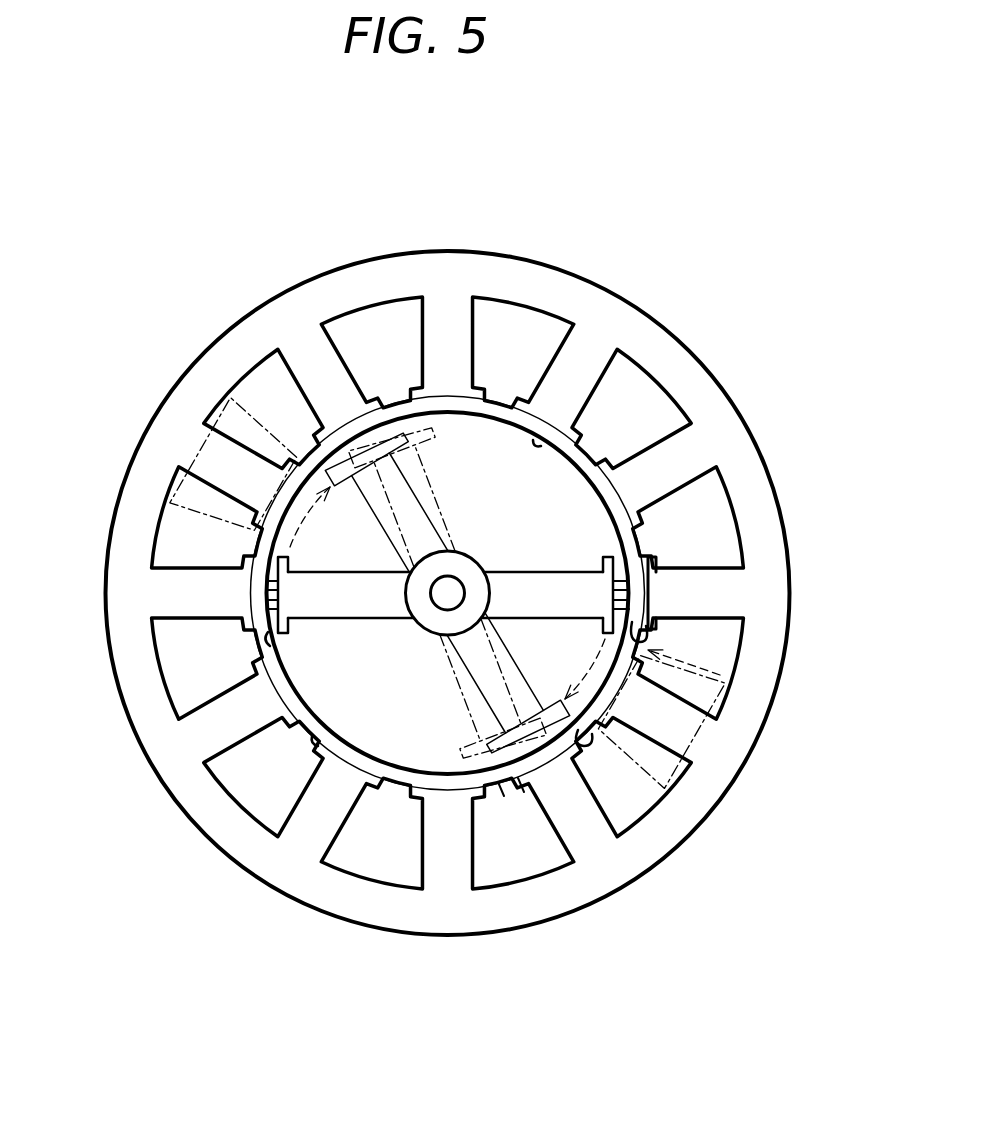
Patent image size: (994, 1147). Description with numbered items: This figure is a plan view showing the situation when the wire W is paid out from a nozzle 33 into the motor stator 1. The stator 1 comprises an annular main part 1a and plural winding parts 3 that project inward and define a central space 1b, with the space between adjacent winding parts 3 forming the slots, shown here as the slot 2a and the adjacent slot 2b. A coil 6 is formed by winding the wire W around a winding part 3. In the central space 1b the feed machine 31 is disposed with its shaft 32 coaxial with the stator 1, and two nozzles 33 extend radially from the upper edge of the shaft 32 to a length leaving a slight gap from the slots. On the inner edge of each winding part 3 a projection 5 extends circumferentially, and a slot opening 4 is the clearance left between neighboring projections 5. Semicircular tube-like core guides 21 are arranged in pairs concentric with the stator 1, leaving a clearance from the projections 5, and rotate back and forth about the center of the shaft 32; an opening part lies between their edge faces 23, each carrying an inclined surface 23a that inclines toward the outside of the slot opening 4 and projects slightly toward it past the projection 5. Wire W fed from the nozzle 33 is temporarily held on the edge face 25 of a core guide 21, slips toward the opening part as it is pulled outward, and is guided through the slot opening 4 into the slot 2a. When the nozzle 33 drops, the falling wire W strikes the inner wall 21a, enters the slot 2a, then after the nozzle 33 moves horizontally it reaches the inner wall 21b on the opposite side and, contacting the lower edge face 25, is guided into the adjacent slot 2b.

The motor stator 1 is at (450, 595).
The annular main part 1a is at (383, 283).
The space 1b is at (467, 470).
The slot 2a is at (173, 544).
The adjacent slot 2b is at (266, 383).
The winding part 3 is at (572, 683).
The slot opening 4 is at (689, 725).
The projection 5 is at (522, 780).
The coil 6 is at (175, 490).
The core guide 21 is at (316, 744).
The inner wall 21a is at (272, 642).
The inner wall 21b is at (536, 456).
The edge face 23 is at (644, 600).
The inclined surface 23a is at (645, 633).
The edge face 25 is at (639, 573).
The feed machine 31 is at (437, 628).
The shaft 32 is at (445, 612).
The nozzle 33 is at (576, 673).
The wire W is at (640, 560).